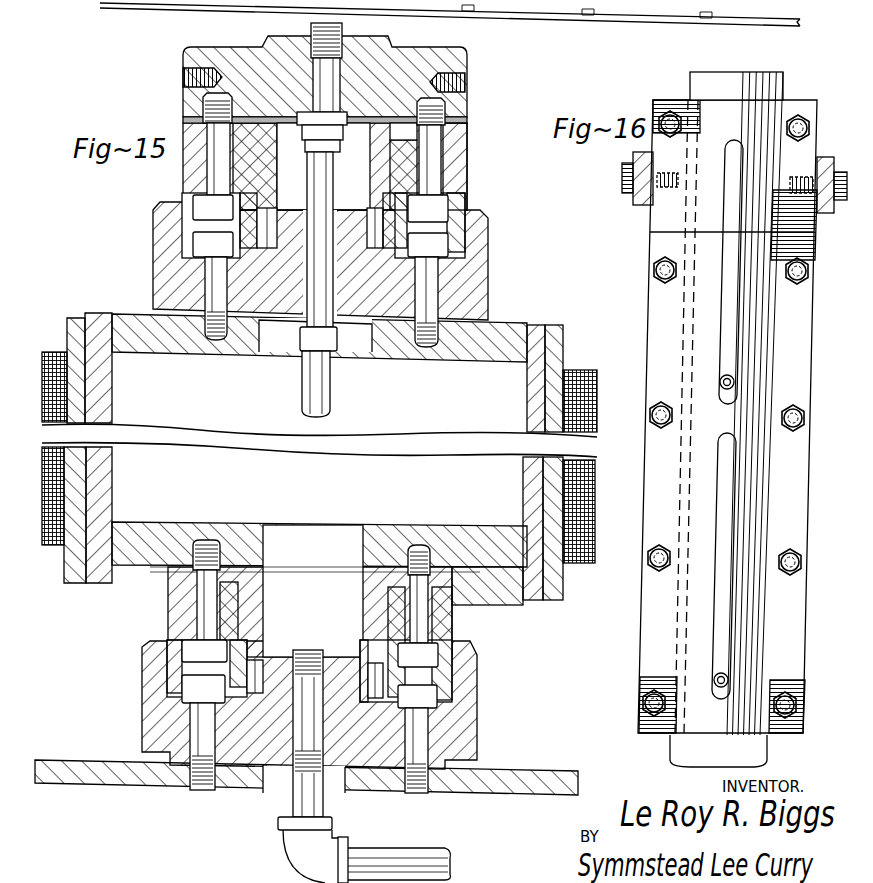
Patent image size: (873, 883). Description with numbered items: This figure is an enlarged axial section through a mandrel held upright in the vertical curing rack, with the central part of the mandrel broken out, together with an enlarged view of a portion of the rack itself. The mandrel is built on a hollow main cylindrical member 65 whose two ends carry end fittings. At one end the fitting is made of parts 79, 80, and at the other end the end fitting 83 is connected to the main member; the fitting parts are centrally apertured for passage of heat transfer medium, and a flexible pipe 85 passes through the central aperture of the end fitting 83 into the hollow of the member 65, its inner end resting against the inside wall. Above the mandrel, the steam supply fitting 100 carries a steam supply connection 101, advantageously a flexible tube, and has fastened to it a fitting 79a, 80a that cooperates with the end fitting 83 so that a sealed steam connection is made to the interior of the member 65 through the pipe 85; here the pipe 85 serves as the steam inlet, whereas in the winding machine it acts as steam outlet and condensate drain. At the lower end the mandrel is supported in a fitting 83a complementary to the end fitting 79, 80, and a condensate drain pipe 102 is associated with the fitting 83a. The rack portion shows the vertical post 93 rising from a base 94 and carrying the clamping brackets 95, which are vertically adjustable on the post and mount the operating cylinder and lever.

In FIG. 15, the main cylindrical member 65 is at (533, 358).
In FIG. 15, the end fitting part 79 is at (443, 608).
In FIG. 15, the fitting part 79a is at (440, 167).
In FIG. 15, the end fitting part 80 is at (442, 642).
In FIG. 15, the fitting part 80a is at (455, 196).
In FIG. 15, the end fitting 83 is at (473, 295).
In FIG. 15, the lower end fitting 83a is at (463, 748).
In FIG. 15, the flexible pipe 85 is at (330, 401).
In FIG. 16, the vertical post 93 is at (697, 90).
In FIG. 16, the base 94 is at (546, 10).
In FIG. 16, the clamping bracket 95 is at (655, 325).
In FIG. 15, the steam supply fitting 100 is at (185, 48).
In FIG. 15, the steam supply connection 101 is at (342, 28).
In FIG. 15, the condensate drain pipe 102 is at (400, 847).